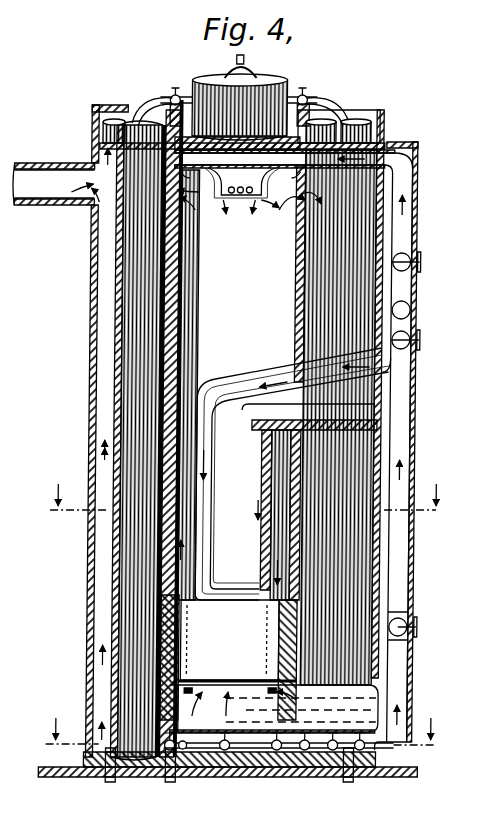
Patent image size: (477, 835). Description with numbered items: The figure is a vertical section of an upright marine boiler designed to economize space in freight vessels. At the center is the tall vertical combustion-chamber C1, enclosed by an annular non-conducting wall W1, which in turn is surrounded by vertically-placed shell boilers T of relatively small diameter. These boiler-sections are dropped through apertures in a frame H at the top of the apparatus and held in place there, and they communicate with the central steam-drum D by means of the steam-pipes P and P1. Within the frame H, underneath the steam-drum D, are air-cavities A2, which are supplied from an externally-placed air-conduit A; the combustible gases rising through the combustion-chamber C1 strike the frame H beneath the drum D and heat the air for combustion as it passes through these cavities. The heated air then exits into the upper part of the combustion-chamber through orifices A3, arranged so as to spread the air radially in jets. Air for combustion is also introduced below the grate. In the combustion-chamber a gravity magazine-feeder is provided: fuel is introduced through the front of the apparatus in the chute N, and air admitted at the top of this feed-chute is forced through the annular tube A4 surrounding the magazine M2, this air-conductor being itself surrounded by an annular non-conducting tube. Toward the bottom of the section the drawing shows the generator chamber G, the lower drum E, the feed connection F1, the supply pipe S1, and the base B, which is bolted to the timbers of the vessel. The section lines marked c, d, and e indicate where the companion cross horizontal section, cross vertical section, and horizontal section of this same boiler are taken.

The steam-pipe P1 is at (338, 87).
The steam-pipe P is at (176, 95).
The frame H is at (106, 132).
The section line c c is at (228, 439).
The steam-drum D is at (238, 102).
The air-conduit A is at (413, 185).
The air-cavities A2 is at (241, 186).
The orifices A3 is at (246, 202).
The shell boiler T is at (247, 435).
The combustion-chamber C1 is at (253, 275).
The non-conducting wall W1 is at (180, 336).
The chute N is at (308, 497).
The annular tube A4 is at (212, 441).
The magazine M2 is at (229, 502).
The generator chamber G is at (228, 657).
The bottom drum E is at (292, 690).
The feed valve F1 is at (235, 748).
The supply pipe S1 is at (260, 738).
The base B is at (287, 762).
The section line d d is at (243, 504).
The section line e e is at (239, 738).